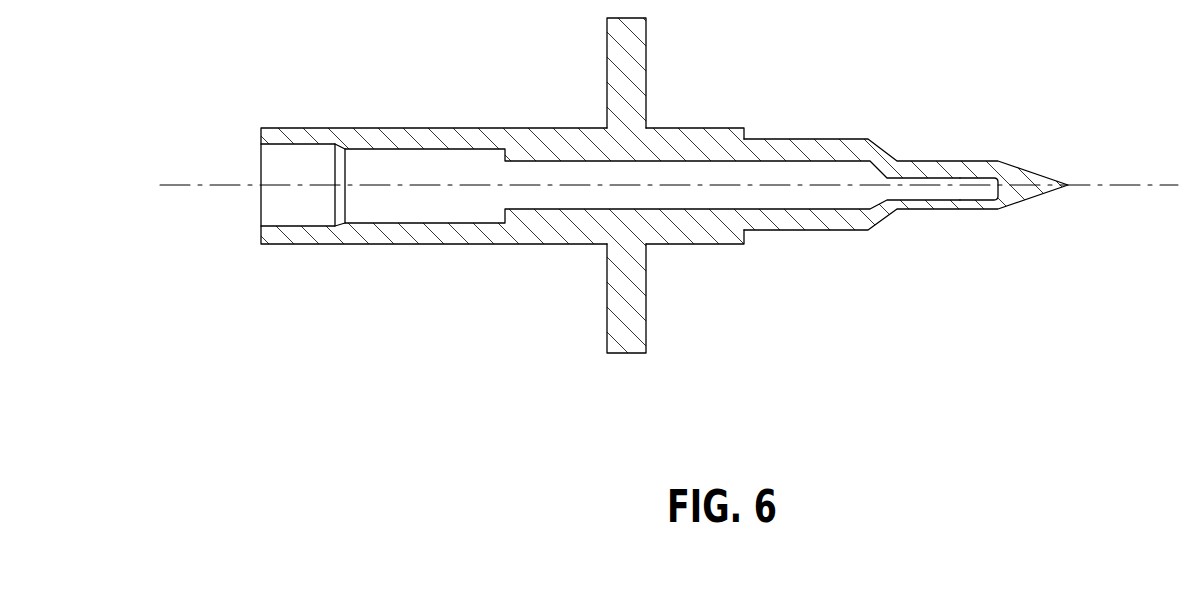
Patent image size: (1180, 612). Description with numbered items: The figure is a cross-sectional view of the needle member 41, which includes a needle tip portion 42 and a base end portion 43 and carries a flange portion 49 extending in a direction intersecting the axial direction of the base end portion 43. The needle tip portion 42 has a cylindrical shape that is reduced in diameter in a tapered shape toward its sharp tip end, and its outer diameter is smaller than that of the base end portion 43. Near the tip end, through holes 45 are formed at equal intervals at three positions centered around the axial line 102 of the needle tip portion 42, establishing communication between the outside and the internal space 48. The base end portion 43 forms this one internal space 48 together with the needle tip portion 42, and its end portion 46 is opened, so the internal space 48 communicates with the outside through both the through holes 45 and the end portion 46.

The needle member 41 is at (797, 88).
The needle tip portion 42 is at (934, 160).
The base end portion 43 is at (425, 247).
The through hole 45 is at (980, 212).
The end portion 46 is at (260, 167).
The internal space 48 is at (694, 175).
The flange portion 49 is at (630, 357).
The axial line 102 is at (1115, 177).